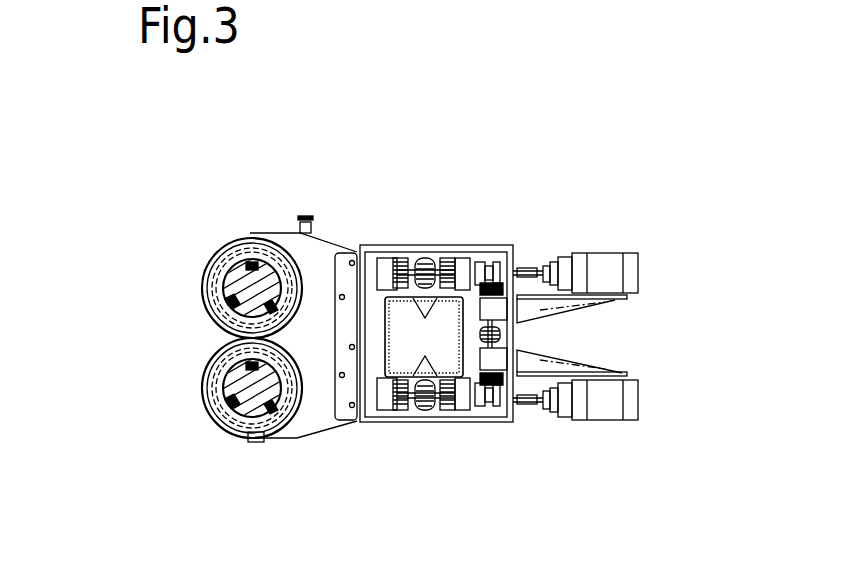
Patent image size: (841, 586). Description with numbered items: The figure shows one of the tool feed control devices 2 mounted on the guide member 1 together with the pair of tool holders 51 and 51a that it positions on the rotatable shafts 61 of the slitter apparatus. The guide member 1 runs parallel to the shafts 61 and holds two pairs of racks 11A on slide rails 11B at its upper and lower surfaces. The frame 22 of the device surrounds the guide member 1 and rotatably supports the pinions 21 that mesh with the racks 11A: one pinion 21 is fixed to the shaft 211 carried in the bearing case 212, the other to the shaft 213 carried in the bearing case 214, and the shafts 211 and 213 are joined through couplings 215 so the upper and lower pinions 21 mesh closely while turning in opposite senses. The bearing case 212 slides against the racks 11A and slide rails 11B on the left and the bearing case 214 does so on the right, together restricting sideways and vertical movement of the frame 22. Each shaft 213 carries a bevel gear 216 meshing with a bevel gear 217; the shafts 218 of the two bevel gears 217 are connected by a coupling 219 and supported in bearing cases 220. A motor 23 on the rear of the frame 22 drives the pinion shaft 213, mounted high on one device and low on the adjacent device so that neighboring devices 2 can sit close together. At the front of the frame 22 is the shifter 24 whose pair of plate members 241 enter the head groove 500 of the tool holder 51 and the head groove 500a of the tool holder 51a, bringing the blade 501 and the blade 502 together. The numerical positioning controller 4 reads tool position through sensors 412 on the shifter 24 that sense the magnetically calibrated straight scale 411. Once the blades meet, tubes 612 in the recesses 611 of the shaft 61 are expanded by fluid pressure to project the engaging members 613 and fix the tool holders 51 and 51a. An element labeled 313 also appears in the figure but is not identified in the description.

The guide member 1 is at (333, 336).
The tool feed control device 2 is at (381, 238).
The numerical positioning controller 4 is at (304, 206).
The racks 11A is at (424, 337).
The slide rails 11B is at (290, 236).
The pinions 21 is at (400, 252).
The shaft 211 is at (415, 252).
The bearing case 212 is at (383, 252).
The shaft 213 is at (442, 252).
The bearing case 214 is at (475, 252).
The couplings 215 is at (428, 252).
The bevel gear 216 is at (498, 252).
The bevel gear 217 is at (510, 252).
The shafts 218 is at (540, 313).
The coupling 219 is at (517, 340).
The frame 22 is at (512, 252).
The bearing cases 220 is at (590, 296).
The motor 23 is at (600, 258).
The shifter 24 is at (312, 236).
The plate members 241 is at (258, 242).
The housing bottom wall 313 is at (263, 442).
The straight scale 411 is at (296, 236).
The sensors 412 is at (266, 242).
The head groove 500 is at (205, 280).
The head groove 500a is at (235, 393).
The blade 501 is at (192, 252).
The blade 502 is at (240, 432).
The tool holder 51 is at (205, 300).
The tool holder 51a is at (238, 380).
The rotatable shafts 61 is at (192, 262).
The recesses 611 is at (235, 306).
The tubes 612 is at (214, 250).
The engaging members 613 is at (195, 248).